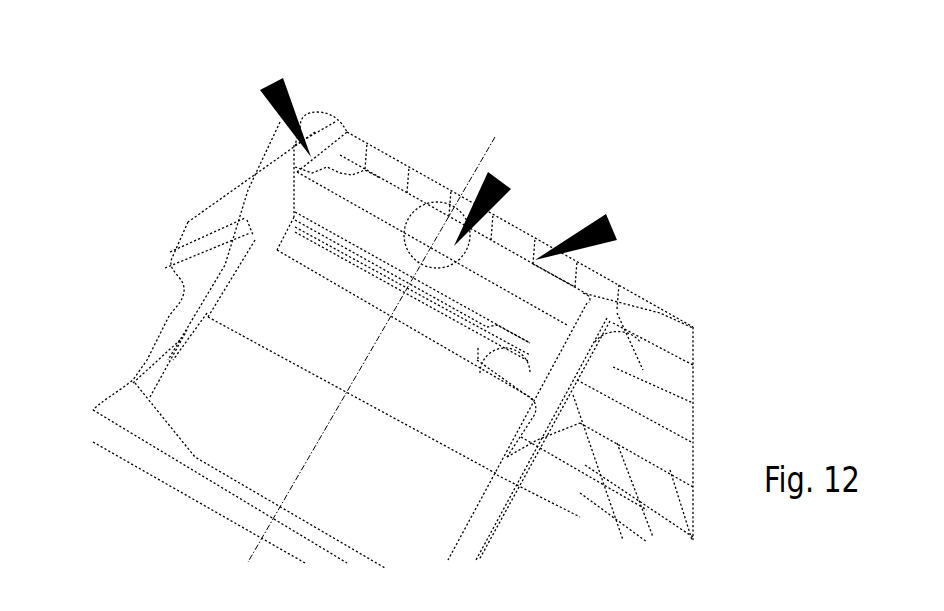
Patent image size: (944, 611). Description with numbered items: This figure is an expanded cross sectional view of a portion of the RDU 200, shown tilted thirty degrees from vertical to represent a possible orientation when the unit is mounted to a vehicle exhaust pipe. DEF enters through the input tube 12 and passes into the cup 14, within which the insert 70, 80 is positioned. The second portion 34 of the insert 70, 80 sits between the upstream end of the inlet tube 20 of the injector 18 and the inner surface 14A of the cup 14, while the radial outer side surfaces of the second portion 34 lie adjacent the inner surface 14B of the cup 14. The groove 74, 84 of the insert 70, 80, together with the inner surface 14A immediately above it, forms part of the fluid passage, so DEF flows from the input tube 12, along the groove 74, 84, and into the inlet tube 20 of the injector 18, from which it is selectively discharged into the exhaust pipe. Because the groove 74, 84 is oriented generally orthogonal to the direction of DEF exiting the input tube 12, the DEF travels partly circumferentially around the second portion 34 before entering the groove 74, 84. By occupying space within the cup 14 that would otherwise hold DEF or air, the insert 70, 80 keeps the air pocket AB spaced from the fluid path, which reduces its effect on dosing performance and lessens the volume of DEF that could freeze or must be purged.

The RDU 200 is at (62, 35).
The input tube 12 is at (658, 367).
The cup 14 is at (317, 123).
The inner surface of cup 14A is at (512, 258).
The inner surface of cup 14B is at (287, 160).
The injector 18 is at (440, 492).
The inlet tube 20 is at (315, 256).
The second portion 34 is at (359, 187).
The insert 70 is at (612, 228).
The insert 80 is at (554, 275).
The groove 74 is at (500, 182).
The groove 84 is at (437, 235).
The air pocket AB is at (274, 86).